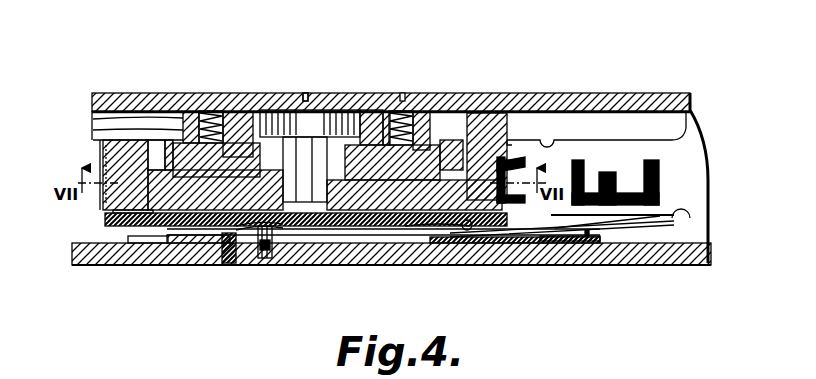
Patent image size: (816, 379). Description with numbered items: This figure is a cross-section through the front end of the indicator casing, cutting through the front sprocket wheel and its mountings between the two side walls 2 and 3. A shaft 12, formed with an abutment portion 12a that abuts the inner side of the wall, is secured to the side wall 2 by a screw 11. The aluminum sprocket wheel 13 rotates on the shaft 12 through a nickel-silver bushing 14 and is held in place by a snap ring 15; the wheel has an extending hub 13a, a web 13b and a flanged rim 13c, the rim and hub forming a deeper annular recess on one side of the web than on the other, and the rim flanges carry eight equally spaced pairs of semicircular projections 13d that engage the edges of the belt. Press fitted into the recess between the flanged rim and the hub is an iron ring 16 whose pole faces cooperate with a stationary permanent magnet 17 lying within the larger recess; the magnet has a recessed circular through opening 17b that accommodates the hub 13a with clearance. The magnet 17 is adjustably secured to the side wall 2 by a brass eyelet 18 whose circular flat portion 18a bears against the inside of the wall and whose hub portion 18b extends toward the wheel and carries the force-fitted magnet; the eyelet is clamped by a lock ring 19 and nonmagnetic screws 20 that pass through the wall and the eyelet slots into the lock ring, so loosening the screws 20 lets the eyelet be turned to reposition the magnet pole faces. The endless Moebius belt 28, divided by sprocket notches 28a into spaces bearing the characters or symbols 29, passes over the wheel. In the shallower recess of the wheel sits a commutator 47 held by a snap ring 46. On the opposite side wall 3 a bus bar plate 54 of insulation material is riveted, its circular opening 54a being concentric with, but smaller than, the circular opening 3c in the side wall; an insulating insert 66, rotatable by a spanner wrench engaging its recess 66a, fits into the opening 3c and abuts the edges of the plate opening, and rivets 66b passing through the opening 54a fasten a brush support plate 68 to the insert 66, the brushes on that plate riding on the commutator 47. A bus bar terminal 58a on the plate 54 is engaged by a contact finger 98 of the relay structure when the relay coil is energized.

The side wall 2 is at (490, 157).
The side wall 3 is at (563, 250).
The circular opening 3c is at (395, 250).
The screw 11 is at (310, 95).
The shaft 12 is at (320, 150).
The abutment portion 12a is at (288, 122).
The sprocket wheel 13 is at (508, 97).
The extending hub 13a is at (233, 103).
The web 13b is at (330, 245).
The flanged rim 13c is at (502, 266).
The semicircular projections 13d is at (100, 143).
The bushing 14 is at (370, 103).
The snap ring 15 is at (283, 265).
The ring 16 is at (452, 115).
The permanent magnet 17 is at (445, 133).
The recessed circular through opening 17b is at (268, 108).
The eyelet 18 is at (93, 117).
The circular flat portion 18a is at (170, 97).
The hub portion 18b is at (399, 100).
The lock ring 19 is at (97, 128).
The screws 20 is at (195, 100).
The endless belt 28 is at (662, 222).
The sprocket notches 28a is at (657, 97).
The characters or symbols 29 is at (660, 180).
The snap ring 46 is at (135, 255).
The commutator 47 is at (115, 245).
The bus bar plate 54 is at (604, 232).
The circular opening 54a is at (213, 267).
The bus bar terminal 58a is at (587, 236).
The insert 66 is at (220, 260).
The recess 66a is at (228, 267).
The rivets 66b is at (320, 260).
The brush support plate 68 is at (470, 240).
The contact finger 98 is at (685, 219).